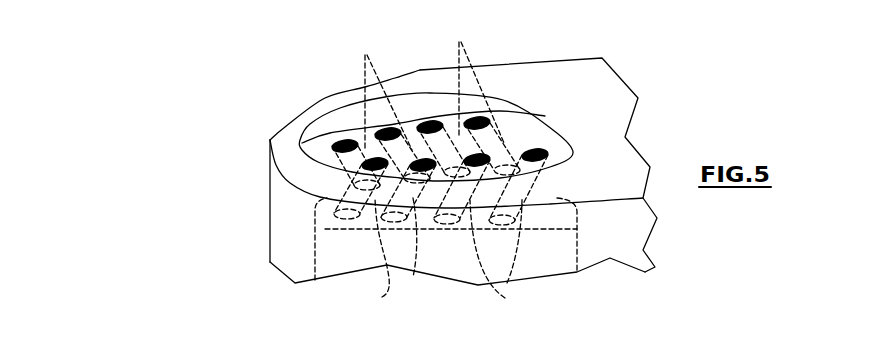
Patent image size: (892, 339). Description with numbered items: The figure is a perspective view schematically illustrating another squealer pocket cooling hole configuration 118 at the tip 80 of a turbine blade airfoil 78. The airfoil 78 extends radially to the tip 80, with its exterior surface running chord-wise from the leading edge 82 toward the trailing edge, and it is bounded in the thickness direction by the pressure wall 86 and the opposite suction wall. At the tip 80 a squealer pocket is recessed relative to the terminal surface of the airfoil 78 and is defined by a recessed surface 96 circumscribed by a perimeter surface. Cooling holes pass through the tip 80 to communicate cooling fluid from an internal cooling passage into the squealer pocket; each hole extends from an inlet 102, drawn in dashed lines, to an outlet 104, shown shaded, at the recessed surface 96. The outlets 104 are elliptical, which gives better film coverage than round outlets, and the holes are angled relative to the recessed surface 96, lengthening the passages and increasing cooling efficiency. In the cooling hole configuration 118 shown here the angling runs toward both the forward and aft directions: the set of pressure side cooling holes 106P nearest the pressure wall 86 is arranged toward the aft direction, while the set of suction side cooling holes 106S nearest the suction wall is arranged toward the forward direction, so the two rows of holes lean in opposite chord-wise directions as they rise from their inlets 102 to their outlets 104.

The airfoil 78 is at (660, 93).
The tip 80 is at (543, 78).
The leading edge 82 is at (272, 153).
The pressure wall 86 is at (427, 255).
The recessed surface 96 is at (302, 139).
The inlet 102 is at (347, 221).
The outlet 104 is at (343, 141).
The suction side cooling holes 106S is at (367, 55).
The pressure side cooling holes 106P is at (448, 232).
The cooling hole configuration 118 is at (222, 170).